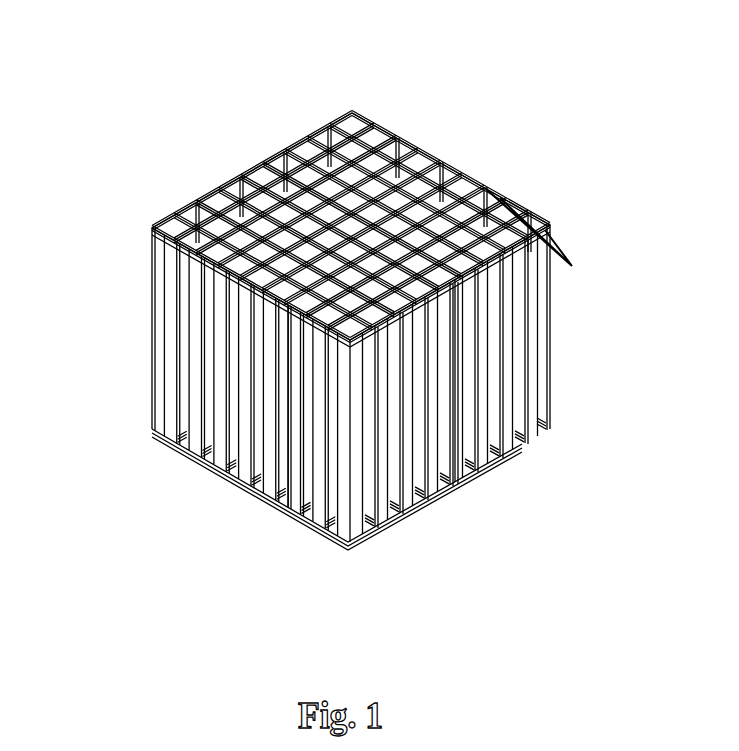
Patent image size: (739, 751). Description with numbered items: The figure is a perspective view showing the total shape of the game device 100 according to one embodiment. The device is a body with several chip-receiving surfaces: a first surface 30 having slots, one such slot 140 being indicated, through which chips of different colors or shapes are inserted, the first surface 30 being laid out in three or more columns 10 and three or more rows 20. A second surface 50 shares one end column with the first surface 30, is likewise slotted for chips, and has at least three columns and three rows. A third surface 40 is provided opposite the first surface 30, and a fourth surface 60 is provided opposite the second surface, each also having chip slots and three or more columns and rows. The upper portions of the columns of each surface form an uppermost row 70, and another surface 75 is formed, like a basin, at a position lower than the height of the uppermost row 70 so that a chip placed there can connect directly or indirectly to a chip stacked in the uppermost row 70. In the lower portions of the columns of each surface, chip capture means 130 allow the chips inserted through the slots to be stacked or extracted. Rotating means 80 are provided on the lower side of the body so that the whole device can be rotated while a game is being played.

The battery module assembly 100 is at (120, 166).
The column 10 is at (230, 474).
The row 20 is at (463, 170).
The first surface 30 is at (287, 410).
The third surface 40 is at (283, 315).
The second surface 50 is at (456, 388).
The fourth surface 60 is at (249, 170).
The uppermost row 70 is at (144, 330).
The another surface 75 is at (357, 217).
The rotating means 80 is at (437, 543).
The chip capture means 130 is at (441, 510).
The slot 140 is at (546, 232).